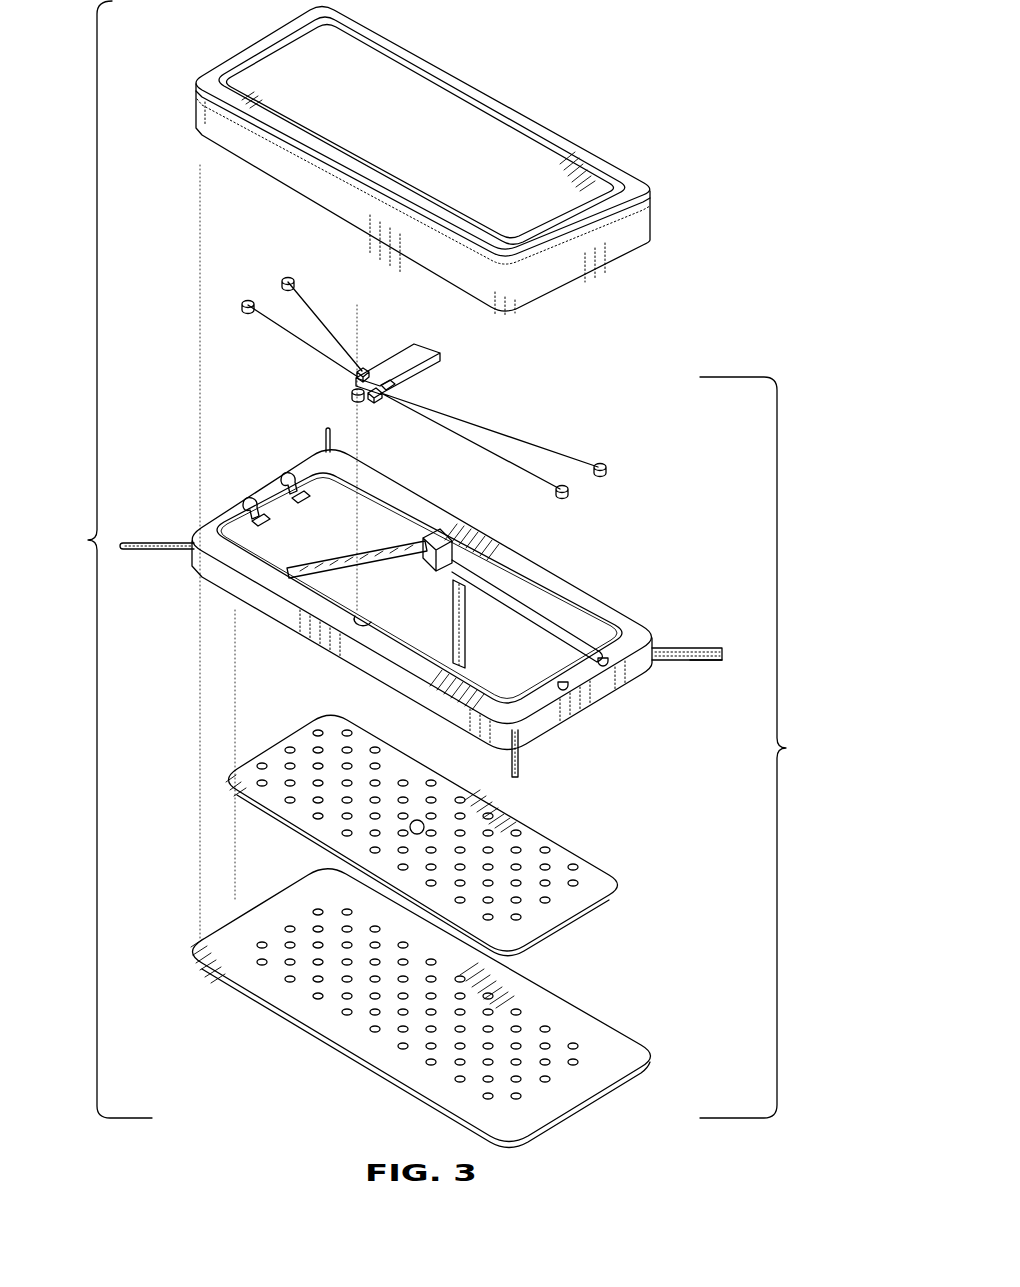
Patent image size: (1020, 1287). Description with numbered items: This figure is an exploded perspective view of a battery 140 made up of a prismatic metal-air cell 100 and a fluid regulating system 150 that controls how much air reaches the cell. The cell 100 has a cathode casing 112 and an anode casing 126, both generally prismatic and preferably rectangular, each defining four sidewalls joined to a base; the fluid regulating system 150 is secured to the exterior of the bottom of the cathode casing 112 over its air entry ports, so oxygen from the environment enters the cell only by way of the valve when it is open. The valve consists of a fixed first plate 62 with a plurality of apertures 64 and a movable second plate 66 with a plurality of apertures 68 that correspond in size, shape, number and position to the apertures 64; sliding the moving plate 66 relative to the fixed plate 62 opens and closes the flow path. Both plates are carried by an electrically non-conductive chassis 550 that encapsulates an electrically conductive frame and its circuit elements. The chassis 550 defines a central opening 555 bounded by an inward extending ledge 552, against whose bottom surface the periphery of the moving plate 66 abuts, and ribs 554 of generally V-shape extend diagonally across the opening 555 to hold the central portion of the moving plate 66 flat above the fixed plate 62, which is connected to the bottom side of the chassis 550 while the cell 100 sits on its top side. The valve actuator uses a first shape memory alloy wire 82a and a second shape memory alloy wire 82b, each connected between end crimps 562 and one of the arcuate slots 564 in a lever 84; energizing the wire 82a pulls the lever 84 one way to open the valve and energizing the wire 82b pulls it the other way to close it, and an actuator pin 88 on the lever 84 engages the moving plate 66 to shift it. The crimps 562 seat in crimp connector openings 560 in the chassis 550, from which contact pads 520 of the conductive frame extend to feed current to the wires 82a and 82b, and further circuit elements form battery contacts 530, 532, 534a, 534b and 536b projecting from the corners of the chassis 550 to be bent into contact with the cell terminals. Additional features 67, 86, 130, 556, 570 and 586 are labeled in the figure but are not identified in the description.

The first plate 62 is at (619, 1054).
The apertures 64 is at (547, 1030).
The second plate 66 is at (601, 884).
The aperture 67 is at (417, 820).
The apertures 68 is at (547, 851).
The first SMA wire 82a is at (312, 311).
The second SMA wire 82b is at (491, 430).
The lever 84 is at (427, 354).
The connector 86 is at (353, 391).
The actuator pin 88 is at (421, 380).
The cell 100 is at (636, 160).
The cathode casing 112 is at (300, 175).
The anode casing 126 is at (434, 101).
The window bezel 130 is at (543, 143).
The battery 140 is at (434, 574).
The fluid regulating system 150 is at (473, 762).
The contact pads 520 is at (298, 505).
The battery contact 530 is at (166, 540).
The battery contact 532 is at (324, 433).
The battery contact 534a is at (693, 648).
The battery contact 534b is at (690, 664).
The battery contact 536b is at (523, 750).
The chassis 550 is at (471, 540).
The inward extending ledge 552 is at (400, 521).
The ribs 554 is at (455, 632).
The central opening 555 is at (483, 617).
The rail 556 is at (552, 613).
The crimp connector openings 560 is at (285, 478).
The crimps 562 is at (287, 279).
The arcuate slots 564 is at (355, 367).
The frame assembly 570 is at (617, 578).
The notch 586 is at (348, 619).